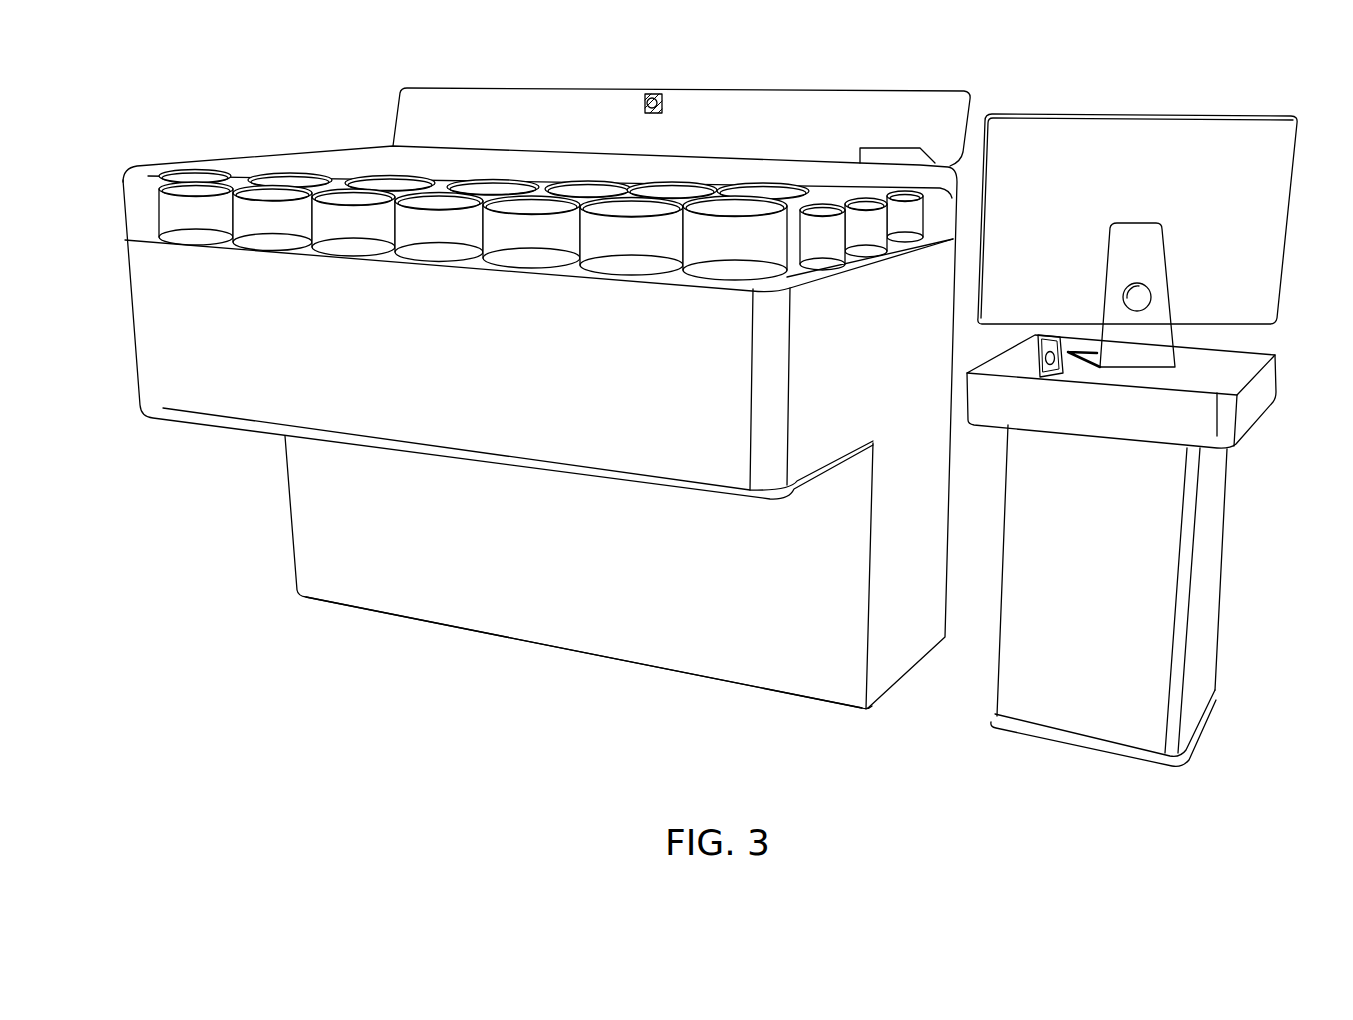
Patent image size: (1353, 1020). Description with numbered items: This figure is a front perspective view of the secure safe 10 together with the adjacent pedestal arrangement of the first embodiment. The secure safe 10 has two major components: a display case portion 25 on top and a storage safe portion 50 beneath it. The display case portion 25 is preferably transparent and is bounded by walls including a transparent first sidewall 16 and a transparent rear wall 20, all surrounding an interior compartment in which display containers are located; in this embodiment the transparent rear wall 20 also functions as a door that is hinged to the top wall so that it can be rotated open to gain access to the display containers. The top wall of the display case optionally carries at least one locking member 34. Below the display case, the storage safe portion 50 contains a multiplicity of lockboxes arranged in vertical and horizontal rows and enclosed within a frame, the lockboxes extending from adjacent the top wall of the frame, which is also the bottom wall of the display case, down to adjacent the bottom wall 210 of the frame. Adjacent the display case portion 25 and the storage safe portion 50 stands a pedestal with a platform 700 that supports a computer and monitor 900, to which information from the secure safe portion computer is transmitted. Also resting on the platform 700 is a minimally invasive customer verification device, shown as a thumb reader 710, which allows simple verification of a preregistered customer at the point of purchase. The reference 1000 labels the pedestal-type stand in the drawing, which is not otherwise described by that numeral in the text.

The secure safe 10 is at (823, 54).
The transparent first sidewall 16 is at (124, 216).
The transparent rear wall 20 is at (393, 117).
The display case portion 25 is at (991, 89).
The locking member 34 is at (651, 94).
The storage safe portion 50 is at (238, 512).
The bottom wall 210 is at (382, 617).
The platform 700 is at (1268, 369).
The thumb reader 710 is at (1048, 332).
The computer and monitor 900 is at (1132, 134).
The stand 1000 is at (1218, 673).